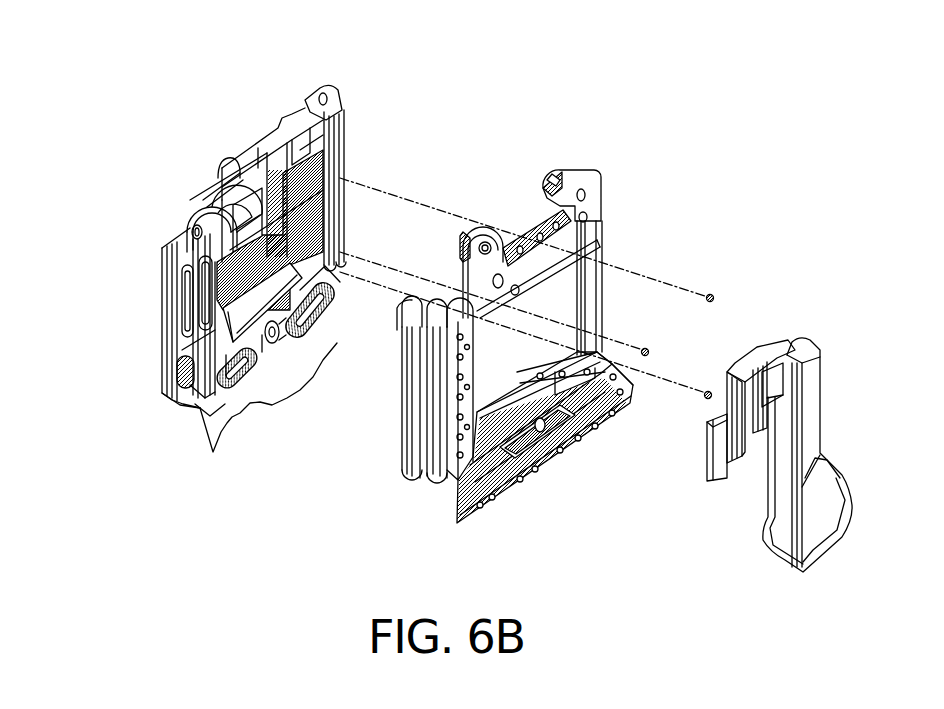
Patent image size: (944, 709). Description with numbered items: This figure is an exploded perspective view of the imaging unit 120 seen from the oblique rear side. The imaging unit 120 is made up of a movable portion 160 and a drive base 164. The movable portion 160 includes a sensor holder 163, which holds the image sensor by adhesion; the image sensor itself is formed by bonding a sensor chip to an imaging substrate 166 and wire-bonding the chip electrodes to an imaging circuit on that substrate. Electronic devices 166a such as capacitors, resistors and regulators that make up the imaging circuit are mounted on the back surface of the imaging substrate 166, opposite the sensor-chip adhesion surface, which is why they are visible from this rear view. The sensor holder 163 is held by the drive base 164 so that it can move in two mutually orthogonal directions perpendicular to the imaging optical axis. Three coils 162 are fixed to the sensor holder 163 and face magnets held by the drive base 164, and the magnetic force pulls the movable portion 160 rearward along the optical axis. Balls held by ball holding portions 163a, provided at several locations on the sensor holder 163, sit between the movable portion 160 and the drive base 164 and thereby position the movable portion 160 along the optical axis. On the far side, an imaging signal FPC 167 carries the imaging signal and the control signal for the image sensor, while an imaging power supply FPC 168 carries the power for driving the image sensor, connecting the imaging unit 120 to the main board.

The imaging unit 120 is at (641, 119).
The movable portion 160 is at (206, 165).
The coils 162 is at (251, 378).
The sensor holder 163 is at (165, 254).
The ball holding portions 163a is at (182, 230).
The drive base 164 is at (603, 243).
The imaging substrate 166 is at (345, 140).
The electronic devices 166a is at (338, 207).
The imaging signal FPC 167 is at (800, 360).
The imaging power supply FPC 168 is at (752, 357).